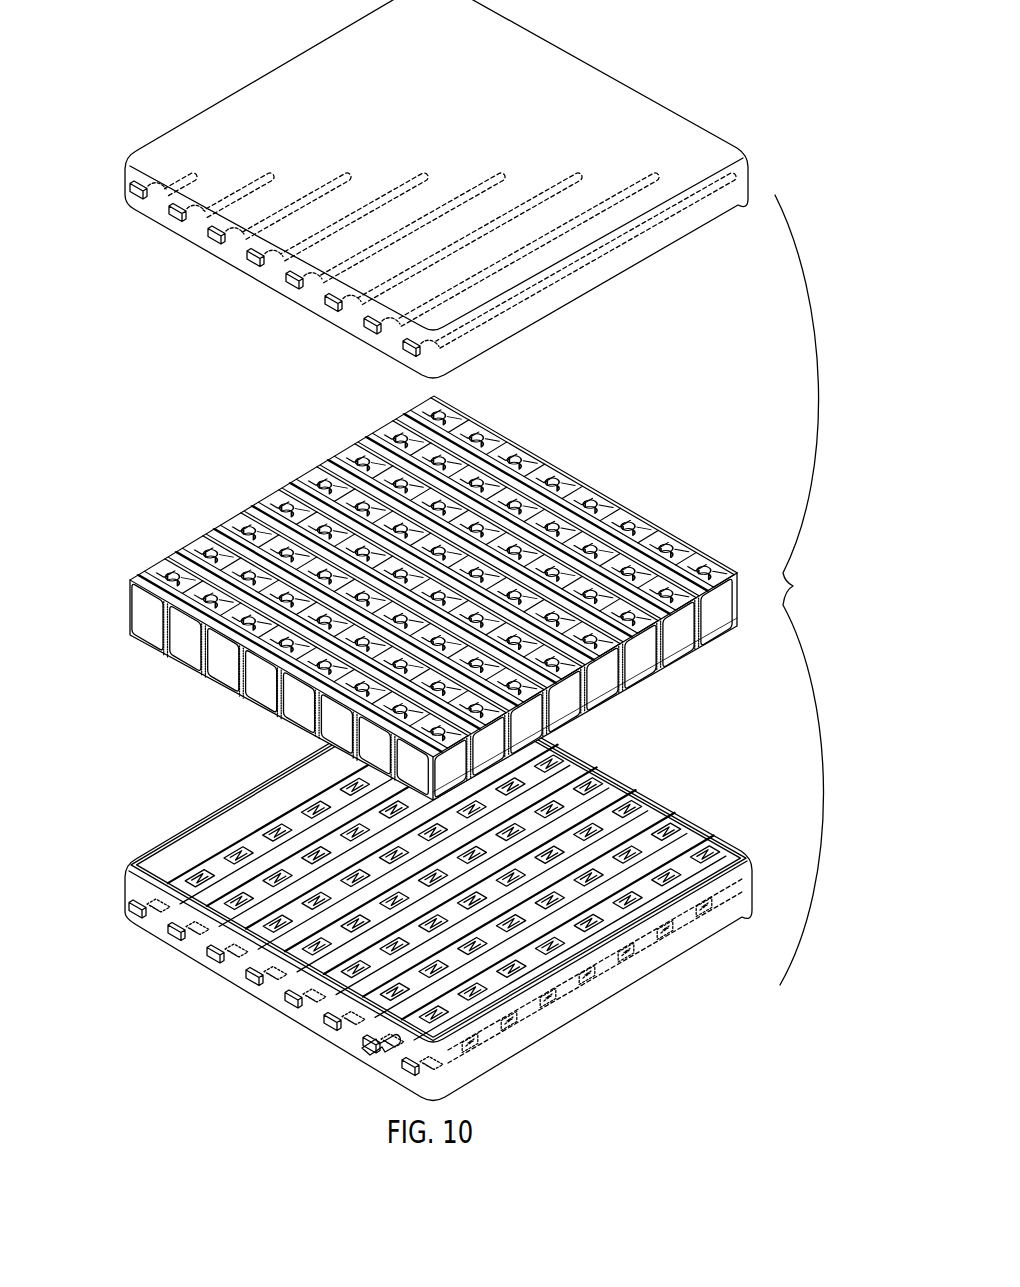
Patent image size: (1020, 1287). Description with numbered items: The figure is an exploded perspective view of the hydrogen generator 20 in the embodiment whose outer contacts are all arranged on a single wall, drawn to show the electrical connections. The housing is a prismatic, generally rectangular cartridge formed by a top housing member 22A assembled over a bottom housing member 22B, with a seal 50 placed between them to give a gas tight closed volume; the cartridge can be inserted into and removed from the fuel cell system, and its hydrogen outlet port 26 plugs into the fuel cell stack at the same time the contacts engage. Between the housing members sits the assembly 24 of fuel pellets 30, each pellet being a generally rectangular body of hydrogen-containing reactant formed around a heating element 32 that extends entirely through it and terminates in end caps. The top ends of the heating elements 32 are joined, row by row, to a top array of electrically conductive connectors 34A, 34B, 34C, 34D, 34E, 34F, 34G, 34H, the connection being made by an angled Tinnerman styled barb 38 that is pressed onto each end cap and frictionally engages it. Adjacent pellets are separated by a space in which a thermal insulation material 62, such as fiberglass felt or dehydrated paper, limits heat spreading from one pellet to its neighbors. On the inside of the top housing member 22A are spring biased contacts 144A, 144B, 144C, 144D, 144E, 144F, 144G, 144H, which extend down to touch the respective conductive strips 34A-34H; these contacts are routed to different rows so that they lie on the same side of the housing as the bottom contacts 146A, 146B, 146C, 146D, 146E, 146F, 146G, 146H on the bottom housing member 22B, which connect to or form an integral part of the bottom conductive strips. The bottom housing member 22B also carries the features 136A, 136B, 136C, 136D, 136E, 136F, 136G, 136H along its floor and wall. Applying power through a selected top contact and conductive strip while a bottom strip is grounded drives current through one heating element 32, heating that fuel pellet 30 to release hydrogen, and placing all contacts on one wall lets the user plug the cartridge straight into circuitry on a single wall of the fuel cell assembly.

The hydrogen generator 20 is at (799, 590).
The top housing member 22A is at (410, 201).
The bottom housing member 22B is at (439, 910).
The assembly of fuel pellets 24 is at (390, 583).
The hydrogen outlet port 26 is at (370, 1063).
The fuel pellet 30 is at (228, 673).
The heating element 32 is at (702, 573).
The top electrically conductive connector 34A is at (160, 575).
The top electrically conductive connector 34B is at (180, 548).
The top electrically conductive connector 34C is at (220, 527).
The top electrically conductive connector 34D is at (260, 503).
The top electrically conductive connector 34E is at (297, 480).
The top electrically conductive connector 34F is at (333, 455).
The top electrically conductive connector 34G is at (373, 430).
The top electrically conductive connector 34H is at (410, 407).
The Tinnerman styled barb 38 is at (593, 483).
The seal 50 is at (752, 858).
The thermal insulation material 62 is at (612, 698).
The cooling channel A 136A is at (217, 860).
The cooling channel B 136B is at (320, 848).
The cooling channel C 136C is at (548, 758).
The cooling channel D 136D is at (567, 800).
The cooling channel E 136E is at (607, 827).
The cooling channel F 136F is at (640, 843).
The cooling channel G 136G is at (683, 867).
The cooling channel H 136H is at (748, 877).
The top electrical contact 144A is at (132, 192).
The top electrical contact 144B is at (172, 215).
The top electrical contact 144C is at (212, 237).
The top electrical contact 144D is at (251, 260).
The top electrical contact 144E is at (290, 282).
The top electrical contact 144F is at (330, 305).
The top electrical contact 144G is at (369, 327).
The top electrical contact 144H is at (410, 354).
The bottom electrical contact 146A is at (125, 912).
The bottom electrical contact 146B is at (164, 935).
The bottom electrical contact 146C is at (203, 957).
The bottom electrical contact 146D is at (242, 979).
The bottom electrical contact 146E is at (281, 1002).
The bottom electrical contact 146F is at (320, 1024).
The bottom electrical contact 146G is at (359, 1049).
The bottom electrical contact 146H is at (401, 1072).